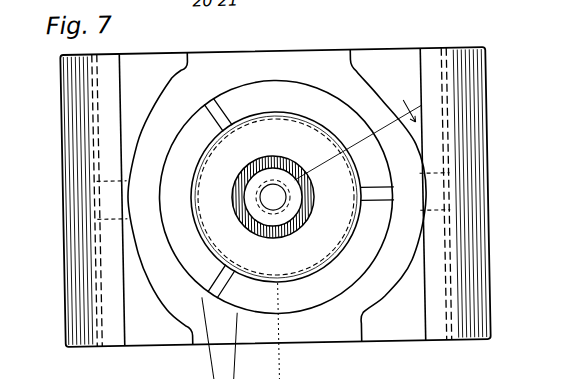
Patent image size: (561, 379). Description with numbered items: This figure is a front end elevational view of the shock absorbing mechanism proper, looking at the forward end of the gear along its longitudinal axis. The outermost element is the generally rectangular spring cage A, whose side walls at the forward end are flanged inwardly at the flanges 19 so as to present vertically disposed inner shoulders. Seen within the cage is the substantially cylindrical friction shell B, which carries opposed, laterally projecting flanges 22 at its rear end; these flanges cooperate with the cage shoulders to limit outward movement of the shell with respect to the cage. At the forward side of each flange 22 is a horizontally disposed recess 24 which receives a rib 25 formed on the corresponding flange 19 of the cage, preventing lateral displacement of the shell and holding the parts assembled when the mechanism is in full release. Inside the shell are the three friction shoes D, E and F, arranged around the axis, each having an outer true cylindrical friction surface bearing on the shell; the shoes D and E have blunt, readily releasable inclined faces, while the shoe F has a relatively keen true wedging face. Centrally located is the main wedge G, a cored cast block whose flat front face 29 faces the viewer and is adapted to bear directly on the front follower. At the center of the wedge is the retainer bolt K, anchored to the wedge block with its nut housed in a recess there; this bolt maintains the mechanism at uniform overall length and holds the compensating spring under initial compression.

The inwardly flanged side wall 19 is at (64, 118).
The laterally projecting flange 22 is at (141, 62).
The horizontally disposed recess 24 is at (108, 177).
The rib 25 is at (232, 198).
The flat front face 29 is at (275, 196).
The spring cage A is at (455, 56).
The friction shell B is at (268, 34).
The friction shoe D is at (315, 98).
The friction shoe E is at (316, 299).
The friction shoe F is at (167, 196).
The main wedge G is at (213, 209).
The retainer bolt K is at (273, 197).